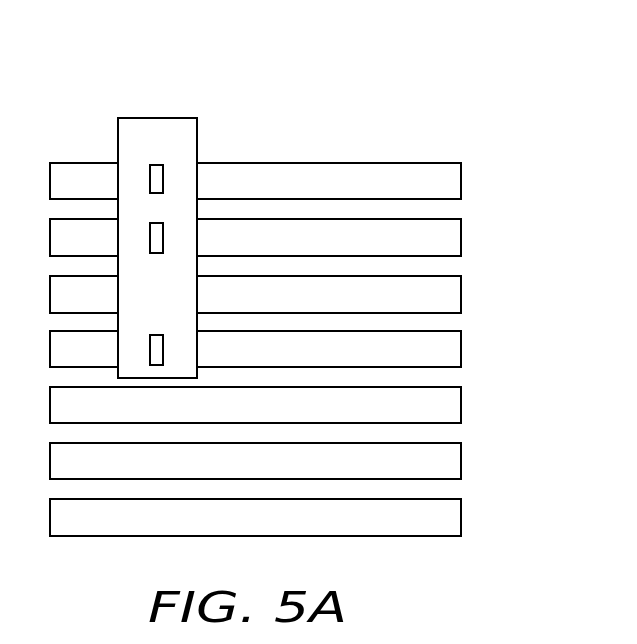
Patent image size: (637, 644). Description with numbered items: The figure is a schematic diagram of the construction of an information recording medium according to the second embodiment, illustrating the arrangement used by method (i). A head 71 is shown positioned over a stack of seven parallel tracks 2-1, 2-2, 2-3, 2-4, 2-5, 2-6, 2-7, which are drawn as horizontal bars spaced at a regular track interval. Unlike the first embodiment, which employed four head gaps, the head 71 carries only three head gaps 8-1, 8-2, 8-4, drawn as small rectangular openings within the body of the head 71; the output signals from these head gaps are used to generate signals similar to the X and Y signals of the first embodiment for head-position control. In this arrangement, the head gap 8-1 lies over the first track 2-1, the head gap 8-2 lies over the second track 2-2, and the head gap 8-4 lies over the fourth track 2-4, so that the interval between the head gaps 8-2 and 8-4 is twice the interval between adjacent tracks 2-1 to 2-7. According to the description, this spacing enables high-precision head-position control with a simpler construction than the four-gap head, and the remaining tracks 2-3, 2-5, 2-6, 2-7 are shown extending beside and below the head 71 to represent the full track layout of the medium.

The head 71 is at (154, 104).
The head gap 8-1 is at (163, 176).
The head gap 8-2 is at (163, 235).
The head gap 8-4 is at (163, 347).
The track 2-1 is at (255, 156).
The track 2-2 is at (437, 204).
The track 2-3 is at (437, 265).
The track 2-4 is at (437, 322).
The track 2-5 is at (437, 377).
The track 2-6 is at (437, 433).
The track 2-7 is at (437, 488).